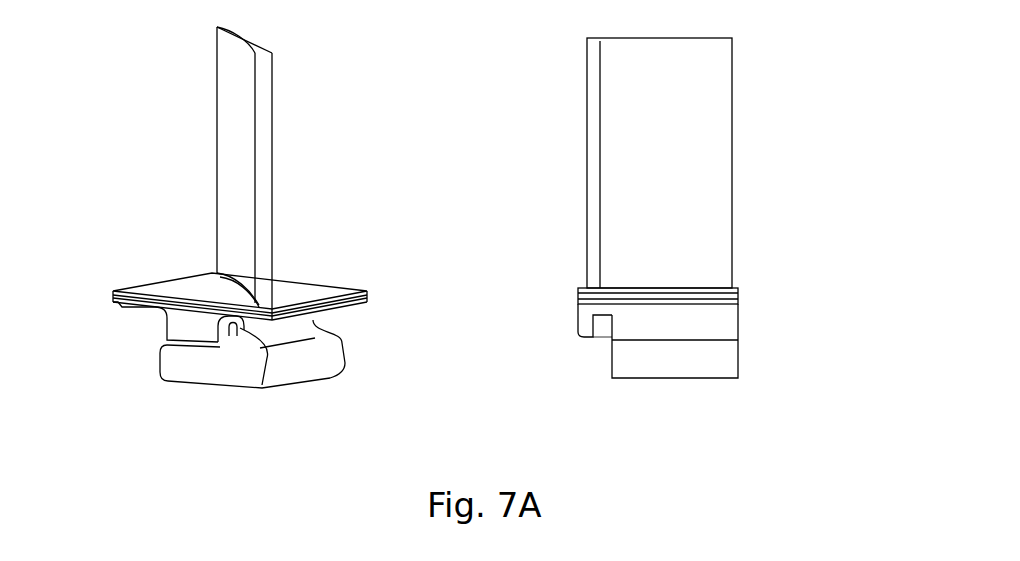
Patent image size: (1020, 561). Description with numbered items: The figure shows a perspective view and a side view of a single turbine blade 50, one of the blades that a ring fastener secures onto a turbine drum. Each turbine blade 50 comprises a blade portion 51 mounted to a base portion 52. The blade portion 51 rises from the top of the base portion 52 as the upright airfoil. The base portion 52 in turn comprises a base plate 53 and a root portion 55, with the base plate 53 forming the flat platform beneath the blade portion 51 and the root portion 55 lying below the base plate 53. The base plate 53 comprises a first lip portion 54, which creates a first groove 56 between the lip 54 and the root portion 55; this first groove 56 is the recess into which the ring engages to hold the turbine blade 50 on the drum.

The turbine blade 50 is at (172, 99).
The blade portion 51 is at (243, 105).
The base portion 52 is at (385, 291).
The base plate 53 is at (290, 290).
The first lip portion 54 is at (185, 316).
The root portion 55 is at (312, 358).
The first groove 56 is at (232, 337).